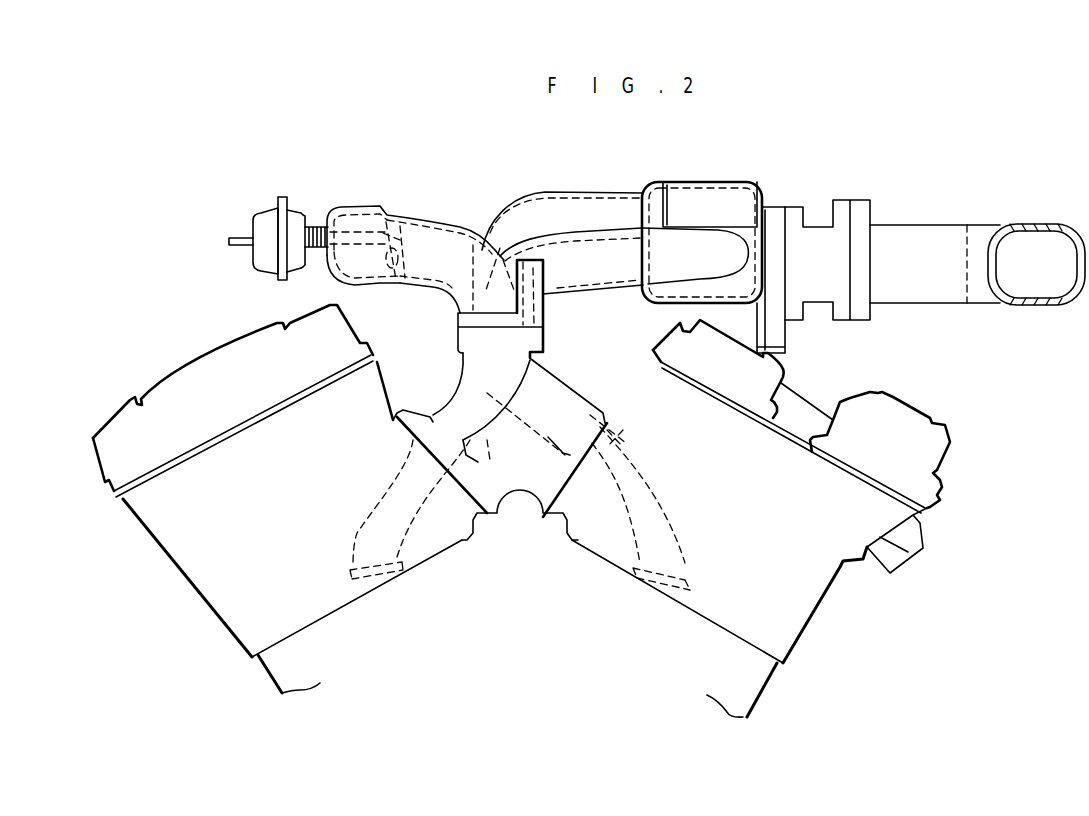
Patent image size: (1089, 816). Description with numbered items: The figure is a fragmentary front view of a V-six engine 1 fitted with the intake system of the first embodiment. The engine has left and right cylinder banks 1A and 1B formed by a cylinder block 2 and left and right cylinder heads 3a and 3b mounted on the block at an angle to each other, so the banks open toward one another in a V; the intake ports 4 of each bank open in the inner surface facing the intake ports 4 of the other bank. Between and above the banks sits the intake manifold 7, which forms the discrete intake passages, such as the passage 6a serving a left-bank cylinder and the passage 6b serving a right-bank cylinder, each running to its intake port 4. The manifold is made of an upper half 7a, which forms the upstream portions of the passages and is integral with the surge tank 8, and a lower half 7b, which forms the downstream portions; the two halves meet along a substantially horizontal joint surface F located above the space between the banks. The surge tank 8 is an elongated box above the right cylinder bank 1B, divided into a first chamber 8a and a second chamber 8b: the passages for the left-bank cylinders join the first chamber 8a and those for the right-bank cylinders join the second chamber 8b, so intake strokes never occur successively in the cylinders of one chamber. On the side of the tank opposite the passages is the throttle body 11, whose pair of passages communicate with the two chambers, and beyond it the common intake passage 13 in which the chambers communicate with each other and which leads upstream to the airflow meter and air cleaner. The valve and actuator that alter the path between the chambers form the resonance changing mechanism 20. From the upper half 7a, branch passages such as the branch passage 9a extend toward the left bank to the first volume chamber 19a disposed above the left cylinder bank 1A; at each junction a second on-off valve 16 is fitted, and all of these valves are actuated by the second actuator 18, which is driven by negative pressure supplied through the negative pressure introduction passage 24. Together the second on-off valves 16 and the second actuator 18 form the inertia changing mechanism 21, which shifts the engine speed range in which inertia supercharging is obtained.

The V-6 engine 1 is at (558, 720).
The left cylinder bank 1A is at (247, 503).
The right cylinder bank 1B is at (796, 537).
The cylinder block 2 is at (282, 672).
The left cylinder head 3a is at (188, 542).
The right cylinder head 3b is at (790, 622).
The intake ports 4 is at (378, 490).
The discrete intake passage 6a is at (540, 422).
The discrete intake passage 6b is at (627, 443).
The intake manifold 7 is at (520, 293).
The upper half 7a is at (594, 192).
The lower half 7b is at (453, 393).
The surge tank 8 is at (734, 218).
The first chamber 8a is at (655, 196).
The second chamber 8b is at (767, 288).
The branch passage 9a is at (431, 238).
The throttle body 11 is at (842, 213).
The common intake passage 13 is at (992, 227).
The second on-off valve 16 is at (399, 218).
The second actuator 18 is at (268, 216).
The first volume chamber 19a is at (338, 205).
The resonance changing mechanism 20 is at (815, 241).
The inertia changing mechanism 21 is at (250, 200).
The negative pressure introduction passage 24 is at (233, 237).
The joint surface F is at (545, 340).